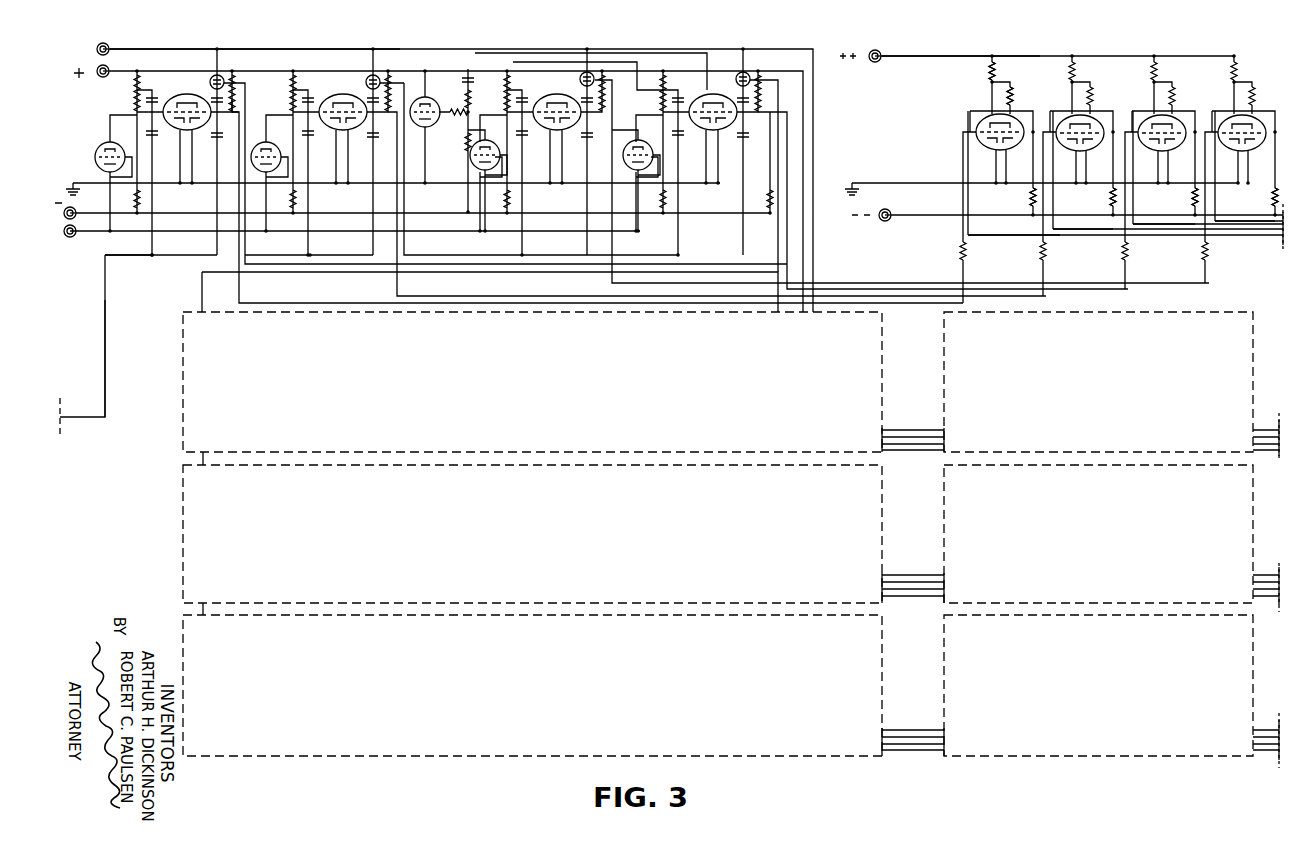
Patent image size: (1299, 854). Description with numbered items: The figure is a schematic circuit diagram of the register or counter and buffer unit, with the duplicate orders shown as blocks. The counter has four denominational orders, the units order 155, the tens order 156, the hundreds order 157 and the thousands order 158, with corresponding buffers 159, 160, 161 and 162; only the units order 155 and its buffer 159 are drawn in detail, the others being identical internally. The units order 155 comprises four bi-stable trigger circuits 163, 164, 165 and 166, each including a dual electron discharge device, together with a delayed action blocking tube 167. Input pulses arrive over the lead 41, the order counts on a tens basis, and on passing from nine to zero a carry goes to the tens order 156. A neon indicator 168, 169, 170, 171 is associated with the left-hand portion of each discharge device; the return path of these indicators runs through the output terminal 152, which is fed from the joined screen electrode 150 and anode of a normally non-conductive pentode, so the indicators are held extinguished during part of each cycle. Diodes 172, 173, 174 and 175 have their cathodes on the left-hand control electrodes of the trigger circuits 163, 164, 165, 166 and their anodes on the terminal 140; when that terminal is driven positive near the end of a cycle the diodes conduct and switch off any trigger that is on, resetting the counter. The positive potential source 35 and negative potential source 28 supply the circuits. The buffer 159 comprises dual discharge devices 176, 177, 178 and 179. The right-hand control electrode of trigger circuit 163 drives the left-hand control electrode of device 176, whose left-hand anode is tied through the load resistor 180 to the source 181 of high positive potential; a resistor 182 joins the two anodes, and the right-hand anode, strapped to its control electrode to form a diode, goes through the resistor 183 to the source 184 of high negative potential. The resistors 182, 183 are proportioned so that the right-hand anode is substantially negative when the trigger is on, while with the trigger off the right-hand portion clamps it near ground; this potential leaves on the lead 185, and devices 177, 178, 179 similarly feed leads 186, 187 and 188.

The output terminal 152 is at (101, 44).
The positive potential source 35 is at (100, 77).
The negative potential source 28 is at (74, 210).
The output terminal 140 is at (72, 248).
The lead 41 is at (104, 316).
The screen electrode 150 is at (236, 109).
The units order 155 is at (450, 36).
The bi-stable trigger circuit 163 is at (197, 91).
The bi-stable trigger circuit 164 is at (349, 92).
The bi-stable trigger circuit 165 is at (562, 87).
The bi-stable trigger circuit 166 is at (736, 89).
The delayed action blocking tube 167 is at (430, 100).
The diode 172 is at (125, 138).
The diode 173 is at (281, 138).
The diode 174 is at (498, 136).
The diode 175 is at (651, 136).
The neon indicator 168 is at (221, 76).
The neon indicator 169 is at (378, 76).
The neon indicator 170 is at (594, 73).
The neon indicator 171 is at (751, 75).
The source of high positive potential 181 is at (878, 63).
The source of high negative potential 184 is at (888, 223).
The units order buffer 159 is at (1091, 47).
The load resistor 180 is at (988, 72).
The resistor 182 is at (1015, 98).
The dual electron discharge device 176 is at (985, 140).
The dual electron discharge device 177 is at (1092, 125).
The dual electron discharge device 178 is at (1175, 125).
The dual electron discharge device 179 is at (1255, 125).
The resistor 183 is at (1028, 197).
The lead 186 is at (1091, 229).
The lead 187 is at (1172, 224).
The lead 188 is at (1256, 221).
The lead 185 is at (1015, 236).
The tens order 156 is at (491, 391).
The hundreds order 157 is at (491, 542).
The thousands order 158 is at (491, 706).
The buffer 160 is at (1098, 397).
The buffer 161 is at (1096, 540).
The buffer 162 is at (1084, 693).